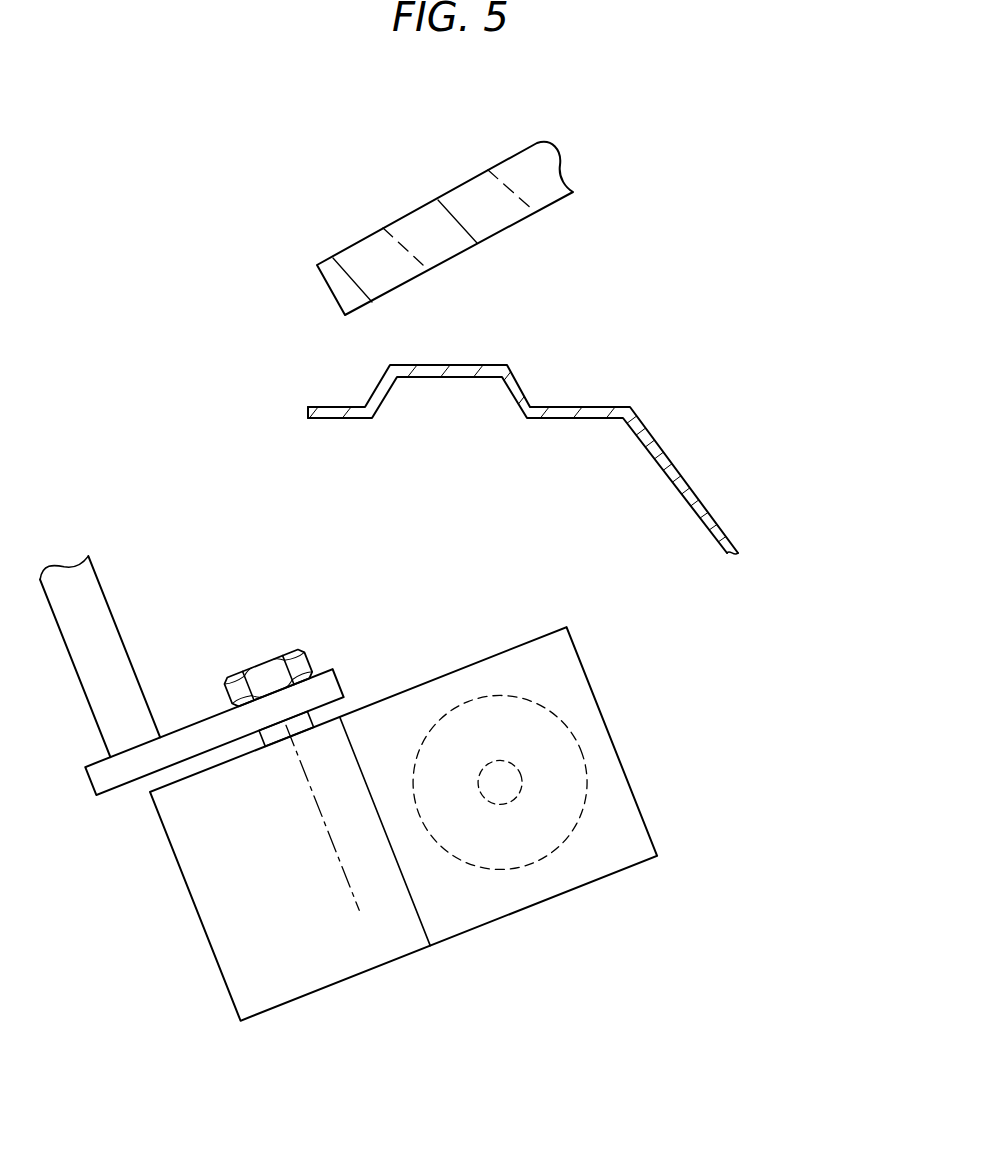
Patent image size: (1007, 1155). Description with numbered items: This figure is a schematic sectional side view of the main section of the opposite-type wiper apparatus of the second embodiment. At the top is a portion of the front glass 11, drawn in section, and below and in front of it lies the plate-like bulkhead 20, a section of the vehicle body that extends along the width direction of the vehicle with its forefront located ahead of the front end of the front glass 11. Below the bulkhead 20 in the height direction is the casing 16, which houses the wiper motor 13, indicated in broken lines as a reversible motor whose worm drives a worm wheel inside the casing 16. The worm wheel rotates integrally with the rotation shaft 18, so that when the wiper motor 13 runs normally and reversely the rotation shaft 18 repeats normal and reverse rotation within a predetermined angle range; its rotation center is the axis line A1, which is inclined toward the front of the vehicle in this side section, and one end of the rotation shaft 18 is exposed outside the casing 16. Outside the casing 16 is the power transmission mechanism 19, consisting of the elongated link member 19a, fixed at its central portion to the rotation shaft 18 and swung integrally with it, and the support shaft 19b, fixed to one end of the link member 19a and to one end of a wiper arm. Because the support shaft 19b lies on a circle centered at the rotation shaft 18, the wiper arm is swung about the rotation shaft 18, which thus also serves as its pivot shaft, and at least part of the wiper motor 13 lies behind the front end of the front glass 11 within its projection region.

The front glass 11 is at (409, 212).
The bulkhead 20 is at (668, 454).
The casing 16 is at (614, 736).
The wiper motor 13 is at (542, 868).
The power transmission mechanism 19 is at (190, 723).
The link member 19a is at (208, 735).
The support shaft 19b is at (113, 650).
The rotation shaft 18 is at (307, 723).
The axis line A1 is at (347, 883).